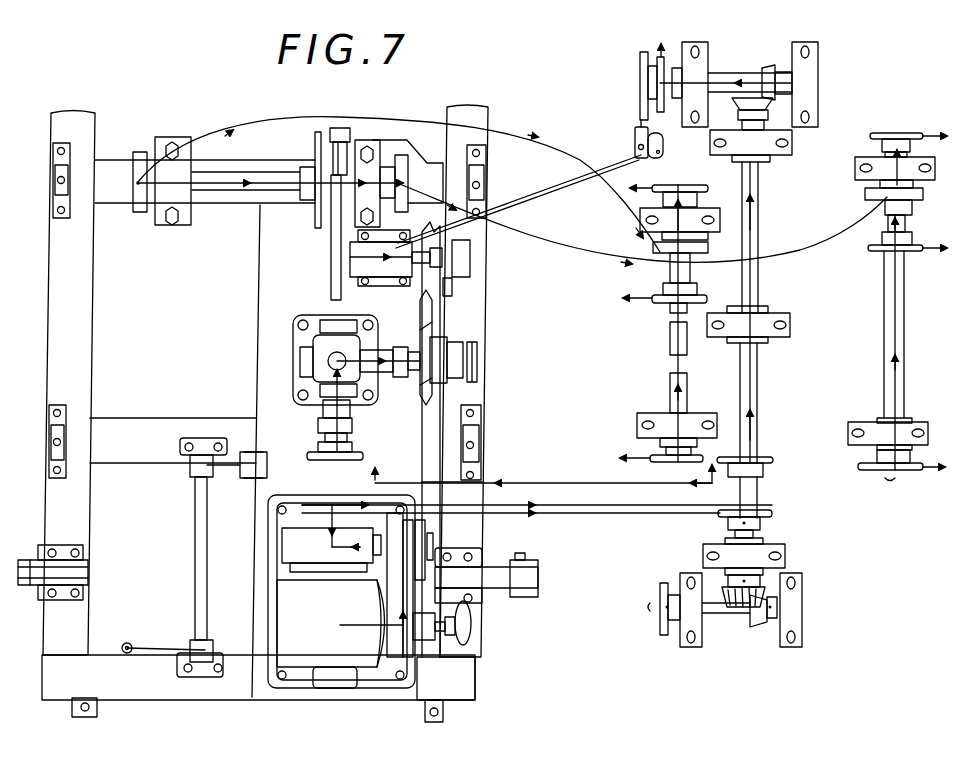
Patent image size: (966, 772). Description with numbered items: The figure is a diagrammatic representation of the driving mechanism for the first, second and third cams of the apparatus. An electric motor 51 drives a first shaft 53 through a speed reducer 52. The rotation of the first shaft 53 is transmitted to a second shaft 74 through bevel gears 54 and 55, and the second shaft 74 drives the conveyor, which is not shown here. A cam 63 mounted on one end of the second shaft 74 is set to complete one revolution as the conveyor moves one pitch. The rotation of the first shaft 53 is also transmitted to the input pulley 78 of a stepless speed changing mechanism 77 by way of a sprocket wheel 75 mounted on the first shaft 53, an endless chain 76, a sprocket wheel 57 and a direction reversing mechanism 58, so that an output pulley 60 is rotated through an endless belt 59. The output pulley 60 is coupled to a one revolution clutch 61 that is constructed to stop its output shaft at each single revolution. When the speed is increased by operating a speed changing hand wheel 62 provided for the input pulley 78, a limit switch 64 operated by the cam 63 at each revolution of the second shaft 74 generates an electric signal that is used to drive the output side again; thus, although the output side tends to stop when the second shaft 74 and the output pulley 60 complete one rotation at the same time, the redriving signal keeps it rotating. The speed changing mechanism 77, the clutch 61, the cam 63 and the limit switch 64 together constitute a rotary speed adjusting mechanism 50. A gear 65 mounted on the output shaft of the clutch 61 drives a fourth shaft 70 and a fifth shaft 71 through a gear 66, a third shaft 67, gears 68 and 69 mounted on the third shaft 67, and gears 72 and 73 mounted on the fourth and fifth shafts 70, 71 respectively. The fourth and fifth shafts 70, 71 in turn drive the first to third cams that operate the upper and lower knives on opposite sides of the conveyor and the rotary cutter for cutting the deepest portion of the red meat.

The rotary speed adjusting mechanism 50 is at (470, 262).
The electric motor 51 is at (268, 620).
The speed reducer 52 is at (282, 546).
The first shaft 53 is at (760, 390).
The bevel gear 54 is at (738, 105).
The bevel gear 55 is at (772, 66).
The sprocket wheel 57 is at (356, 452).
The direction reversing mechanism 58 is at (302, 364).
The endless belt 59 is at (440, 312).
The output pulley 60 is at (452, 288).
The one revolution clutch 61 is at (350, 262).
The speed changing hand wheel 62 is at (478, 380).
The cam 63 is at (645, 52).
The limit switch 64 is at (637, 145).
The gear 65 is at (333, 262).
The gear 66 is at (330, 226).
The third shaft 67 is at (222, 196).
The gear 68 is at (140, 211).
The gear 69 is at (408, 165).
The fourth shaft 70 is at (672, 335).
The fifth shaft 71 is at (888, 322).
The gear 72 is at (653, 250).
The gear 73 is at (868, 196).
The second shaft 74 is at (726, 78).
The sprocket wheel 75 is at (763, 462).
The endless chain 76 is at (537, 482).
The stepless speed changing mechanism 77 is at (440, 332).
The input pulley 78 is at (460, 352).